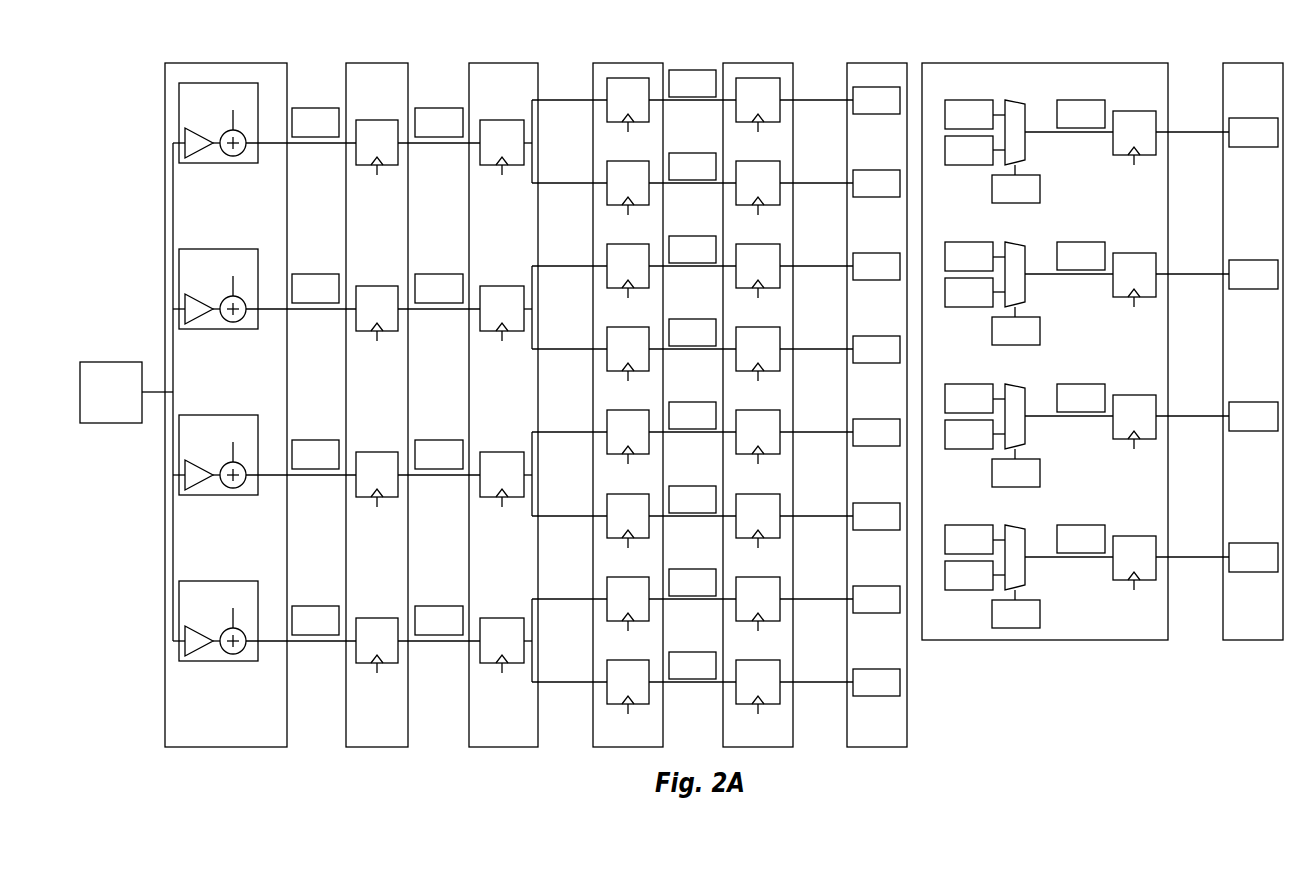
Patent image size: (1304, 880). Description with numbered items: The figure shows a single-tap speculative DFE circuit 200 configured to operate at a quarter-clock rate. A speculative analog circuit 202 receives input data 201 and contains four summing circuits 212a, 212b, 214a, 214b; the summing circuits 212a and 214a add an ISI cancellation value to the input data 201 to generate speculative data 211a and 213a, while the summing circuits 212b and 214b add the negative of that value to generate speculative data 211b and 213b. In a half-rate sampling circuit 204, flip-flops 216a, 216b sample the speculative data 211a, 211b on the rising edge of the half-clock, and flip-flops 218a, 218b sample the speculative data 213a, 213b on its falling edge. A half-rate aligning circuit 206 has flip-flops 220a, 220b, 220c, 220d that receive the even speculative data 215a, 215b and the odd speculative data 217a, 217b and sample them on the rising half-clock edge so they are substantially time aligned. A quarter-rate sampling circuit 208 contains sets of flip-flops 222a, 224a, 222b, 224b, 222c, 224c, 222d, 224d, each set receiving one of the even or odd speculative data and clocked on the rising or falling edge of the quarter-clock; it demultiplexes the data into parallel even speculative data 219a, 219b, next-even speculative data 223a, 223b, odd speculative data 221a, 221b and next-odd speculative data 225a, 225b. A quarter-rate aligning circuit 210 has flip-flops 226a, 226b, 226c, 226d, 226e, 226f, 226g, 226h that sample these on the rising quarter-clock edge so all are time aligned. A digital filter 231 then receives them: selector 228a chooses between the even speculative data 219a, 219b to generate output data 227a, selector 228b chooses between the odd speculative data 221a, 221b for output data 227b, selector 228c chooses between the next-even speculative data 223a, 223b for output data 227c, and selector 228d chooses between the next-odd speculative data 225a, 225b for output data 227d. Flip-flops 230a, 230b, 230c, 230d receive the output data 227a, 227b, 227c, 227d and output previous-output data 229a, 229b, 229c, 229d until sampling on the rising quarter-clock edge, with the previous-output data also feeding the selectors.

The single-tap speculative DFE circuit 200 is at (1079, 668).
The input data 201 is at (113, 362).
The speculative analog circuit 202 is at (193, 55).
The half-rate sampling circuit 204 is at (382, 55).
The half-rate aligning circuit 206 is at (497, 55).
The quarter-rate sampling circuit 208 is at (621, 55).
The quarter-rate aligning circuit 210 is at (750, 55).
The speculative data 211a is at (297, 134).
The speculative data 211b is at (297, 300).
The summing circuit 212a is at (208, 167).
The summing circuit 212b is at (208, 333).
The speculative data 213a is at (297, 466).
The speculative data 213b is at (297, 632).
The summing circuit 214a is at (208, 499).
The summing circuit 214b is at (208, 665).
The even speculative data 215a is at (420, 134).
The even speculative data 215b is at (420, 300).
The flip-flop 216a is at (398, 155).
The flip-flop 216b is at (398, 321).
The odd speculative data 217a is at (420, 466).
The odd speculative data 217b is at (420, 632).
The flip-flop 218a is at (398, 487).
The flip-flop 218b is at (398, 653).
The even speculative data 219a is at (674, 94).
The even speculative data 219b is at (674, 260).
The flip-flop 220a is at (533, 123).
The flip-flop 220b is at (533, 289).
The flip-flop 220c is at (533, 455).
The flip-flop 220d is at (533, 621).
The odd speculative data 221a is at (674, 426).
The odd speculative data 221b is at (674, 593).
The flip-flop 222a is at (649, 110).
The flip-flop 222b is at (649, 276).
The flip-flop 222c is at (649, 442).
The flip-flop 222d is at (649, 609).
The next-even speculative data 223a is at (674, 177).
The next-even speculative data 223b is at (674, 343).
The flip-flop 224a is at (649, 193).
The flip-flop 224b is at (649, 359).
The flip-flop 224c is at (649, 526).
The flip-flop 224d is at (649, 692).
The next-odd speculative data 225a is at (674, 510).
The next-odd speculative data 225b is at (674, 676).
The flip-flop 226a is at (781, 83).
The flip-flop 226b is at (781, 166).
The flip-flop 226c is at (781, 249).
The flip-flop 226d is at (781, 332).
The flip-flop 226e is at (781, 415).
The flip-flop 226f is at (781, 499).
The flip-flop 226g is at (781, 582).
The flip-flop 226h is at (781, 665).
The output data 227a is at (1062, 125).
The output data 227b is at (1062, 267).
The output data 227c is at (1062, 409).
The output data 227d is at (1062, 550).
The selector 228a is at (1017, 99).
The selector 228b is at (1017, 241).
The selector 228c is at (1017, 383).
The selector 228d is at (1017, 524).
The previous-output data 229a is at (1234, 143).
The previous-output data 229b is at (1234, 285).
The previous-output data 229c is at (1234, 427).
The previous-output data 229d is at (1234, 568).
The flip-flop 230a is at (1157, 117).
The flip-flop 230b is at (1157, 259).
The flip-flop 230c is at (1157, 401).
The flip-flop 230d is at (1157, 542).
The digital filter 231 is at (1094, 55).